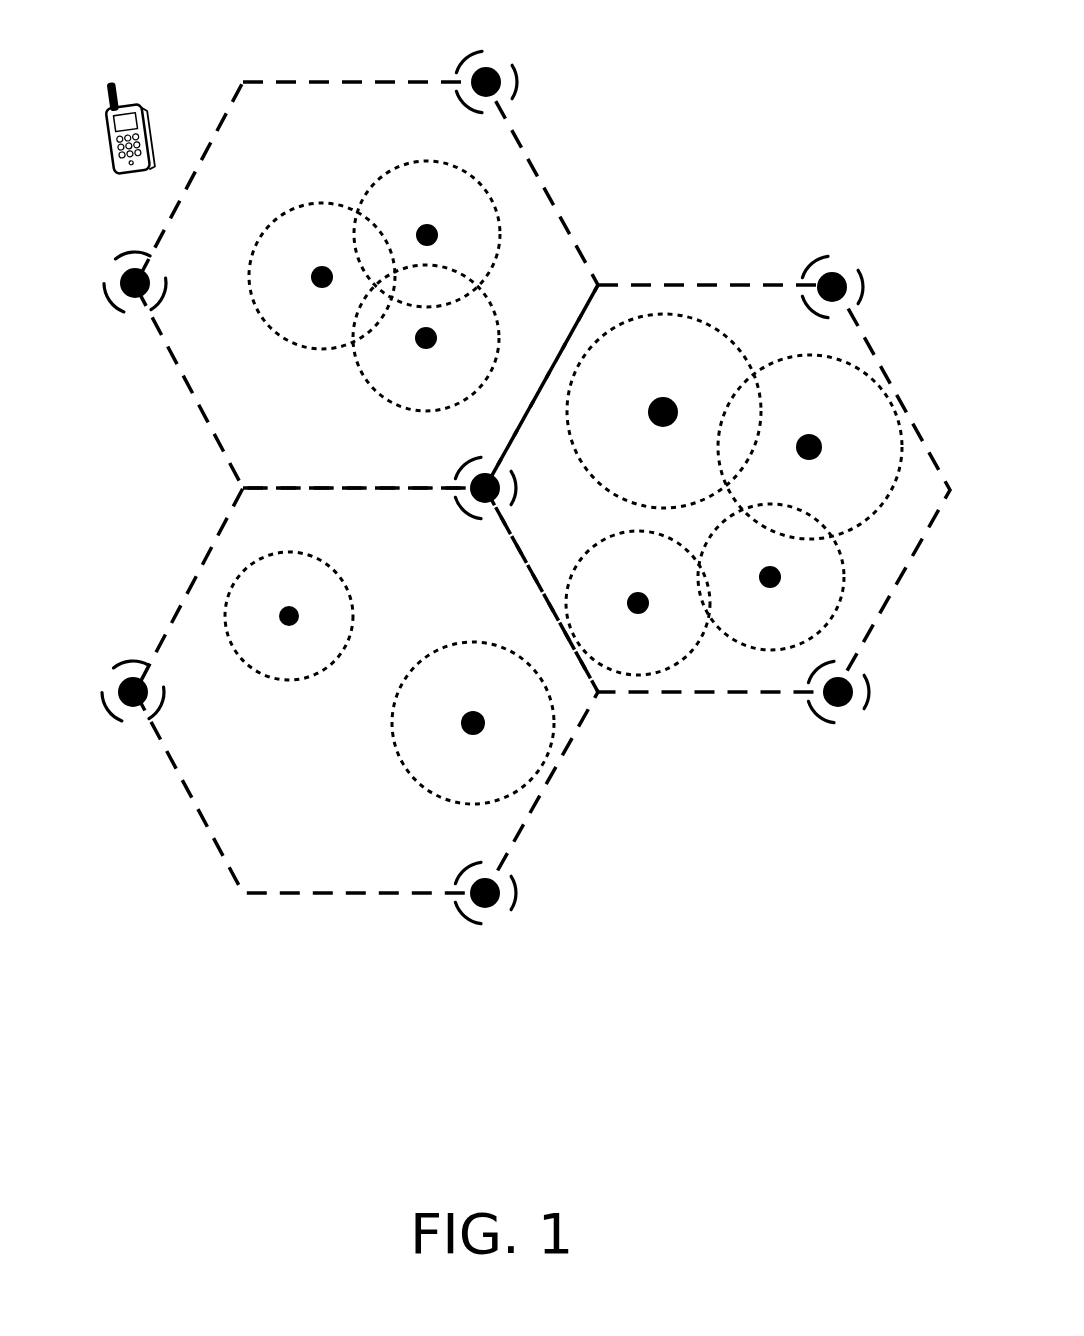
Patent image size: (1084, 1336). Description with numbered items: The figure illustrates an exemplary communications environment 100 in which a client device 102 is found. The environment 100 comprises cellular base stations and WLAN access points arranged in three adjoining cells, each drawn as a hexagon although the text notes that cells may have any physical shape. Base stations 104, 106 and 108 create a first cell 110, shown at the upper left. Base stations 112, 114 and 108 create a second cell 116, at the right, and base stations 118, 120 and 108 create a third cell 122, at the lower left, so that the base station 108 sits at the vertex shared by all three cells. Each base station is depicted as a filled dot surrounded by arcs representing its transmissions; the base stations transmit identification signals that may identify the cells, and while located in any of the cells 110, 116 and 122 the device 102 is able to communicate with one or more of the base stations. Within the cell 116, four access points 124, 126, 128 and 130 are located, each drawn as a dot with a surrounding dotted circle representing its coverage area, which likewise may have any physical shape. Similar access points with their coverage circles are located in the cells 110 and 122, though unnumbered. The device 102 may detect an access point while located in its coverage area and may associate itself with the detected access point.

The communications environment 100 is at (757, 104).
The client device 102 is at (153, 137).
The base station 104 is at (493, 72).
The base station 106 is at (122, 278).
The base station 108 is at (478, 482).
The cell 110 is at (366, 285).
The base station 112 is at (842, 280).
The base station 114 is at (847, 703).
The cell 116 is at (717, 488).
The base station 118 is at (492, 905).
The base station 120 is at (120, 692).
The cell 122 is at (366, 690).
The access point 124 is at (652, 404).
The access point 126 is at (808, 460).
The access point 128 is at (763, 580).
The access point 130 is at (632, 606).